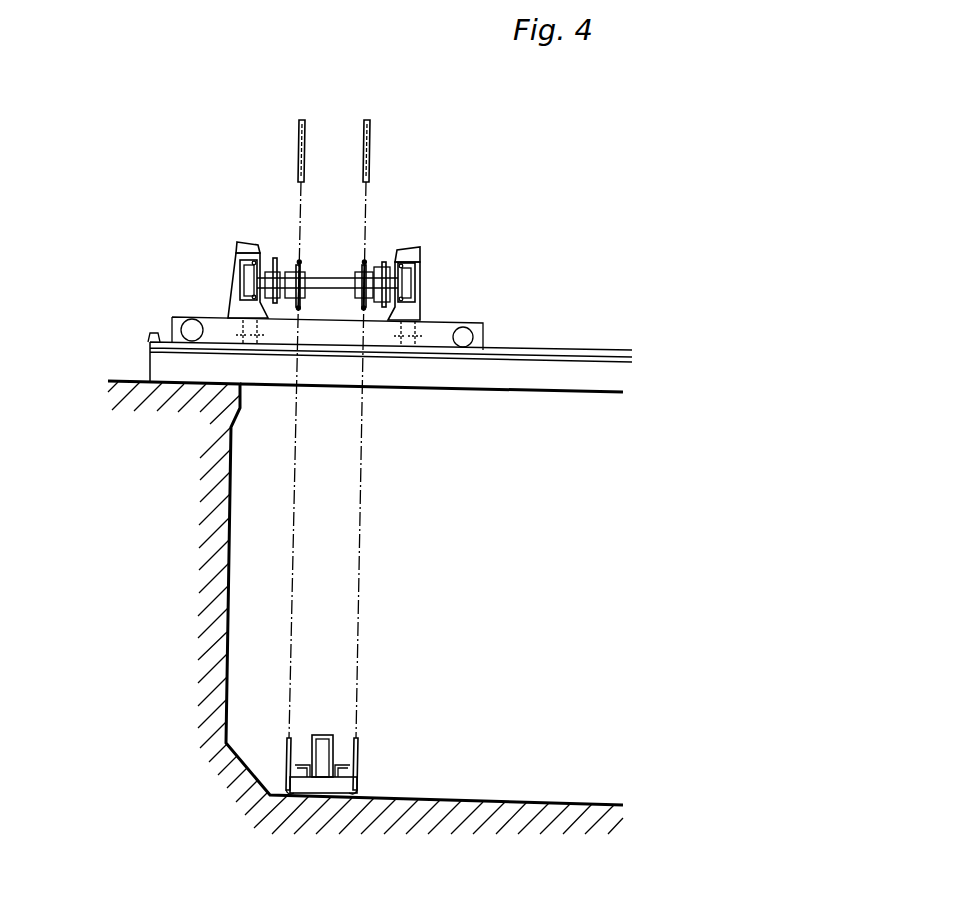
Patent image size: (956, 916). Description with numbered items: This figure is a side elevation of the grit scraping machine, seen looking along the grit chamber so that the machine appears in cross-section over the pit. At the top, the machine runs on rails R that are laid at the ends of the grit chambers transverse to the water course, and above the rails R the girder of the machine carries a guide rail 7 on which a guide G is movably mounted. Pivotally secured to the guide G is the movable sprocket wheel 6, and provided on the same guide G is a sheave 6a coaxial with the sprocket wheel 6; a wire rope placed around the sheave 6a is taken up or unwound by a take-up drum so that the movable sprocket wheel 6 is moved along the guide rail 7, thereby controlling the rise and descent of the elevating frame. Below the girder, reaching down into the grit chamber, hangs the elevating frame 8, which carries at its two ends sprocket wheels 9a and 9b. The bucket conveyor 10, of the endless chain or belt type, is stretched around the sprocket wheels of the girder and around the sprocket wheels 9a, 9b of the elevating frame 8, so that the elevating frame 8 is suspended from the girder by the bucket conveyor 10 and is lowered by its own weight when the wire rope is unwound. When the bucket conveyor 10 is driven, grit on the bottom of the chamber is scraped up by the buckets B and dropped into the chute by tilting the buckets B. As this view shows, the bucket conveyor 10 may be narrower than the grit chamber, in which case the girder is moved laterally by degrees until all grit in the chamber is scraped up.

The rails R is at (575, 355).
The guide rail 7 is at (419, 256).
The guide G is at (233, 286).
The sheave 6a is at (274, 259).
The movable sprocket wheel 6 is at (300, 266).
The bucket conveyor 10 is at (296, 517).
The sprocket wheel 9a is at (287, 758).
The sprocket wheel 9b is at (337, 769).
The elevating frame 8 is at (322, 735).
The buckets B is at (318, 785).